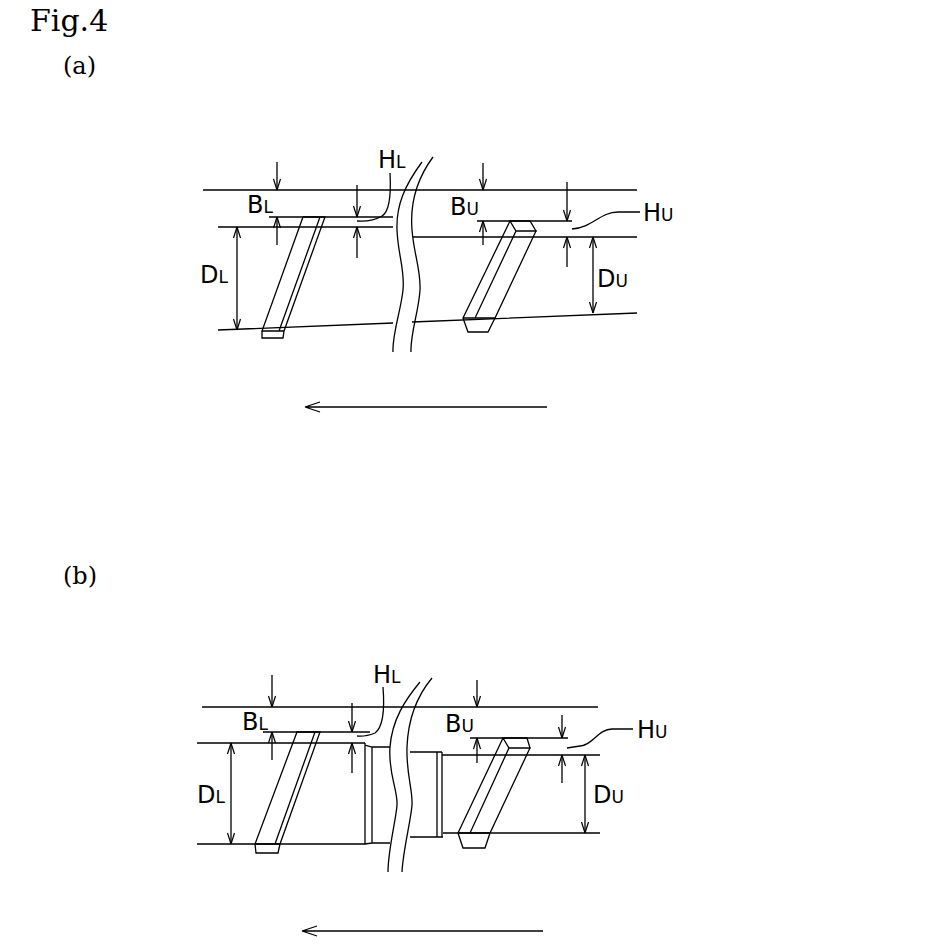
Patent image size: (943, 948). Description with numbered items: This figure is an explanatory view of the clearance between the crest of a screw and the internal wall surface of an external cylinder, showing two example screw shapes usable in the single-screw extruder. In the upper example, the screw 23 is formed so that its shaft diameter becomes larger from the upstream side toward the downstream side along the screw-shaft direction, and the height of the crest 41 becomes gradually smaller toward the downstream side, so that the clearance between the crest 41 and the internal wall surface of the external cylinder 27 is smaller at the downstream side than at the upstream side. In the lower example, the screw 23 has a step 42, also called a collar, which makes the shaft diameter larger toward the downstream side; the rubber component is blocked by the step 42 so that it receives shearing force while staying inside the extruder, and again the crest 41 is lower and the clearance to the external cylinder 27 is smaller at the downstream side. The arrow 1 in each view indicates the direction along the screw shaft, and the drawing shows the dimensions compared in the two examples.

The vehicle traveling direction 1 is at (424, 656).
The screw 23 is at (628, 255).
The external cylinder 27 is at (618, 166).
The crest 41 is at (523, 256).
The step 42 is at (368, 797).